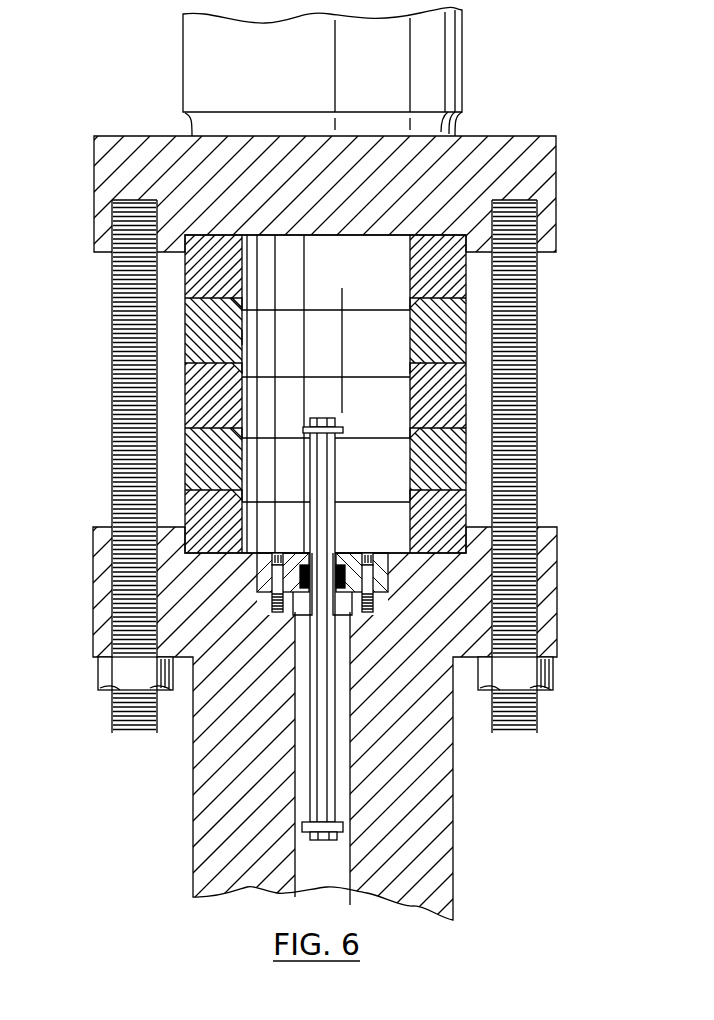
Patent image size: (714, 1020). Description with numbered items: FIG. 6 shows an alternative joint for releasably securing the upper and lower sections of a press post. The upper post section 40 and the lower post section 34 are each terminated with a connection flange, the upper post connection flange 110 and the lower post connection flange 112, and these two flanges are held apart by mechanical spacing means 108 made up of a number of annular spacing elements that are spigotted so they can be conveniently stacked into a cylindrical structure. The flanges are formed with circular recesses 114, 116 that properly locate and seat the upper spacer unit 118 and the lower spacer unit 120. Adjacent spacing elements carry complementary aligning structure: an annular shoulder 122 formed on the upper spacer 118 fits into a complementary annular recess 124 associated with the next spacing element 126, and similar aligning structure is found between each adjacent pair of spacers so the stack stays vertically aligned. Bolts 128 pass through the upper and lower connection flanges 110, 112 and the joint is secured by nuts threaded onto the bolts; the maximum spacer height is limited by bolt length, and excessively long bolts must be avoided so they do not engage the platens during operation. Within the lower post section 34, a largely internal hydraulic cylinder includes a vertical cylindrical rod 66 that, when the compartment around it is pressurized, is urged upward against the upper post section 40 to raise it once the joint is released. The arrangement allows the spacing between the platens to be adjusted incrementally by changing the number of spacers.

The upper post section 40 is at (432, 70).
The circular recess 114 is at (237, 233).
The upper post connection flange 110 is at (532, 172).
The mechanical spacing means 108 is at (474, 405).
The upper spacer unit 118 is at (388, 290).
The spacing element 126 is at (391, 358).
The annular shoulder 122 is at (242, 302).
The annular recess 124 is at (242, 338).
The bolts 128 is at (112, 440).
The lower spacer unit 120 is at (393, 545).
The circular recess 116 is at (213, 557).
The lower post connection flange 112 is at (545, 588).
The rod 66 is at (318, 772).
The lower post section 34 is at (420, 787).